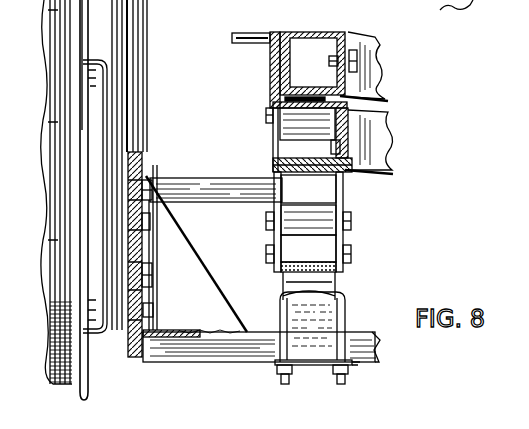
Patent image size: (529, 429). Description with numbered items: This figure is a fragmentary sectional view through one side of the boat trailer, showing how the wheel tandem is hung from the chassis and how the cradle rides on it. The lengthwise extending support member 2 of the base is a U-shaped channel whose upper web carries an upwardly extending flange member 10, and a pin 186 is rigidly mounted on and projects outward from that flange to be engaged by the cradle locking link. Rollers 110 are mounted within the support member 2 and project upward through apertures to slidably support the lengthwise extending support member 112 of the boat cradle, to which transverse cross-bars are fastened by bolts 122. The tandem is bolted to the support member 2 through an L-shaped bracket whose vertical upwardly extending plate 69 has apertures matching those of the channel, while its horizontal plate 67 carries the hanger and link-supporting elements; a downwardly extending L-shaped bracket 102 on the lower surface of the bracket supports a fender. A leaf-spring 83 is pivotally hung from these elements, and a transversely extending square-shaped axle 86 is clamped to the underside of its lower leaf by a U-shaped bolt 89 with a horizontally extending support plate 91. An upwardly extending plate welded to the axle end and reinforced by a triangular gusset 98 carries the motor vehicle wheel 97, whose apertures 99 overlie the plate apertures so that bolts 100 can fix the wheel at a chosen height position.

The lengthwise extending support member 2 is at (273, 162).
The flange member 10 is at (292, 54).
The horizontal plate 67 is at (349, 199).
The vertical upwardly extending plate 69 is at (386, 137).
The leaf-spring 83 is at (345, 279).
The square-shaped axle 86 is at (252, 358).
The U-shaped bolt 89 is at (340, 384).
The horizontally extending support plate 91 is at (360, 366).
The motor vehicle wheel 97 is at (87, 398).
The triangular gusset 98 is at (196, 249).
The aperture 99 is at (143, 152).
The bolt 100 is at (148, 178).
The downwardly extending L-shaped bracket 102 is at (210, 176).
The roller 110 is at (352, 117).
The lengthwise extending support member 112 is at (311, 32).
The bolt 122 is at (357, 57).
The pin 186 is at (232, 34).